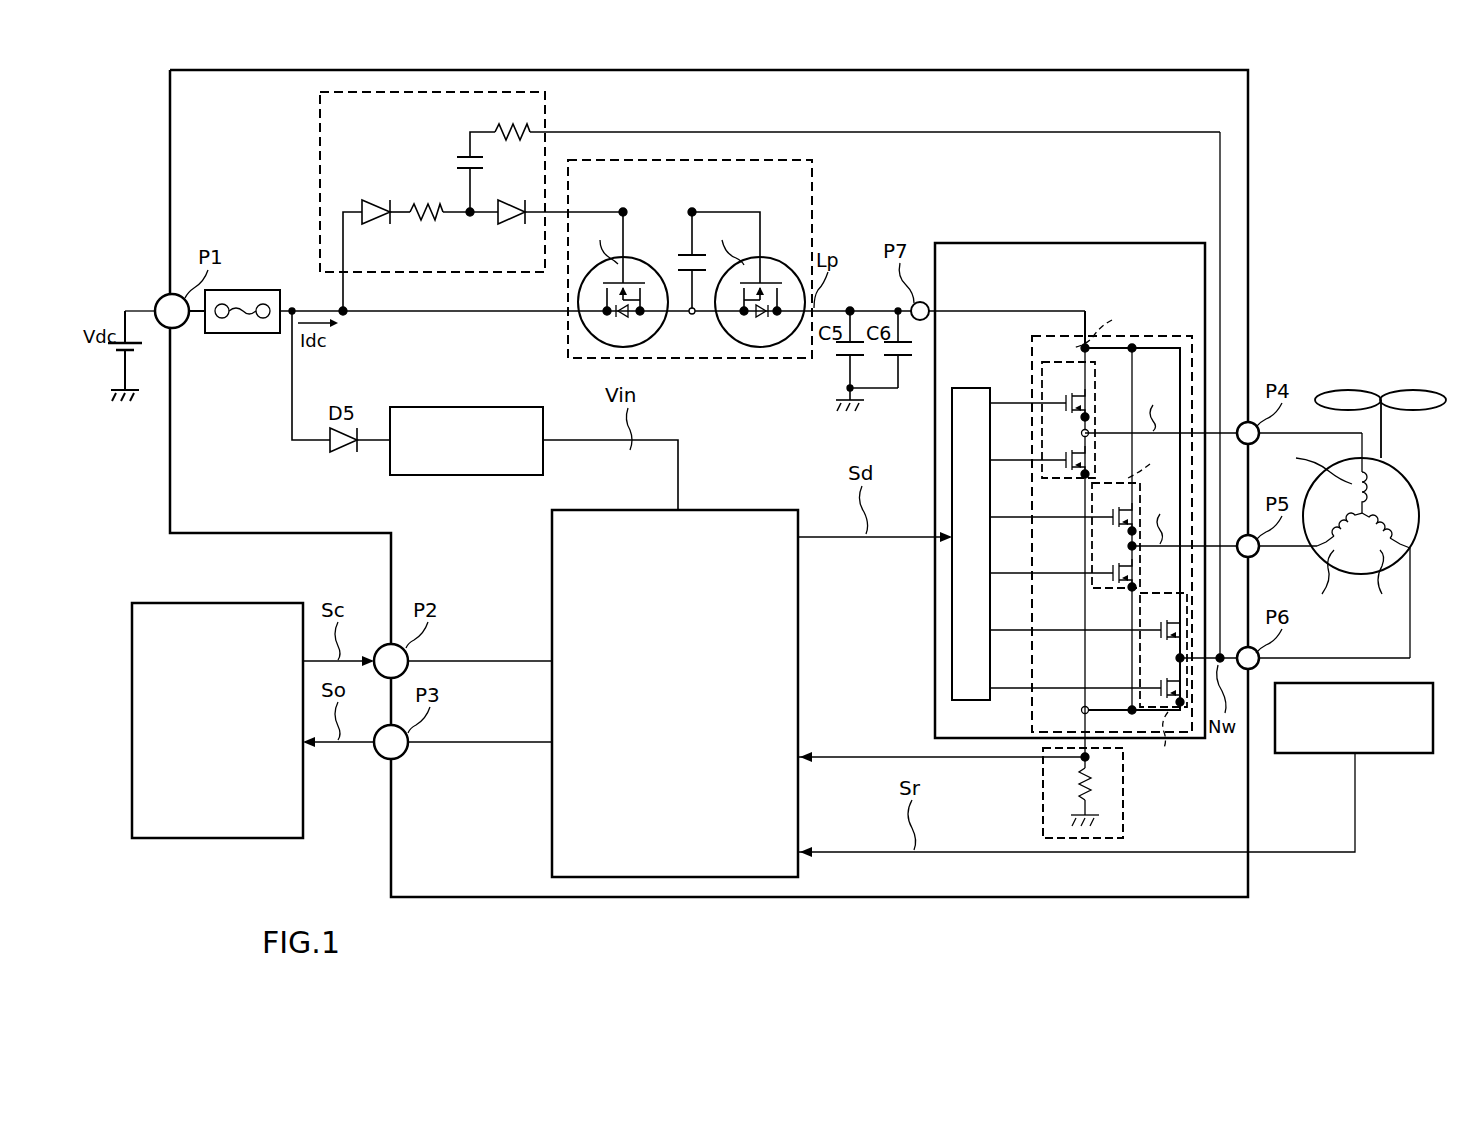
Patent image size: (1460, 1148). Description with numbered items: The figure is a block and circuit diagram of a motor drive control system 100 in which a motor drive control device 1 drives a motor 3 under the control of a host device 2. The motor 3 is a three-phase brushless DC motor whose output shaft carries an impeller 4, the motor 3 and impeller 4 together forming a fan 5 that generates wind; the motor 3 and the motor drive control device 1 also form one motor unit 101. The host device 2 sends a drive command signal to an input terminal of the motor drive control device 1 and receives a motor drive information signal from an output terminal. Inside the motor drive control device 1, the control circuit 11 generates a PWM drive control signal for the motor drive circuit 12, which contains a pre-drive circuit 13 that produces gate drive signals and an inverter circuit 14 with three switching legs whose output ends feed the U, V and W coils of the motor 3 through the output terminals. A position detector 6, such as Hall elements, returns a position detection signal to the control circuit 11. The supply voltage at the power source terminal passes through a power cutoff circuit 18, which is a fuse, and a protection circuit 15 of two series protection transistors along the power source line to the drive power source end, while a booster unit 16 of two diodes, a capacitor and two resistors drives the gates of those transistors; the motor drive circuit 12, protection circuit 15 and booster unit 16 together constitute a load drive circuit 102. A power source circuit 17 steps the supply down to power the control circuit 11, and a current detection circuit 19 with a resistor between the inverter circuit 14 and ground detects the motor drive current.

The motor drive control system 100 is at (1400, 75).
The motor drive control device 1 is at (1250, 130).
The motor unit 101 is at (1265, 234).
The load drive circuit 102 is at (1136, 227).
The host device 2 is at (234, 603).
The motor 3 is at (1410, 480).
The impeller 4 is at (1347, 390).
The fan 5 is at (1412, 382).
The position detector 6 is at (1428, 682).
The control circuit 11 is at (747, 509).
The motor drive circuit 12 is at (1062, 243).
The pre-drive circuit 13 is at (972, 388).
The inverter circuit 14 is at (1170, 334).
The protection circuit 15 is at (813, 185).
The booster unit 16 is at (320, 177).
The power source circuit 17 is at (470, 407).
The power cutoff circuit 18 is at (243, 335).
The current detection circuit 19 is at (1124, 806).